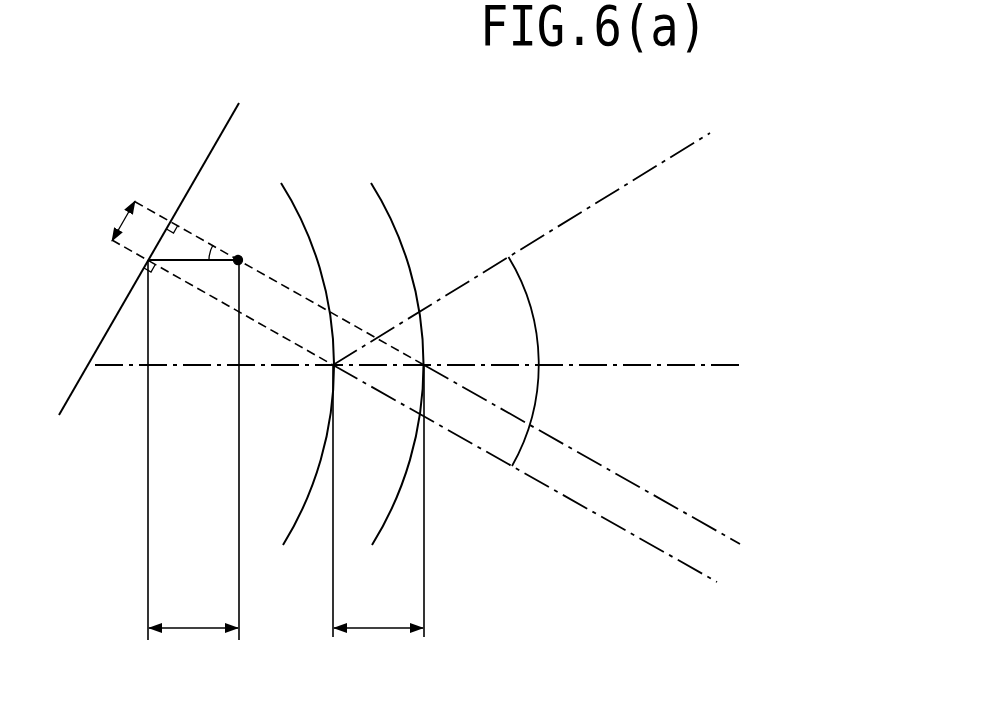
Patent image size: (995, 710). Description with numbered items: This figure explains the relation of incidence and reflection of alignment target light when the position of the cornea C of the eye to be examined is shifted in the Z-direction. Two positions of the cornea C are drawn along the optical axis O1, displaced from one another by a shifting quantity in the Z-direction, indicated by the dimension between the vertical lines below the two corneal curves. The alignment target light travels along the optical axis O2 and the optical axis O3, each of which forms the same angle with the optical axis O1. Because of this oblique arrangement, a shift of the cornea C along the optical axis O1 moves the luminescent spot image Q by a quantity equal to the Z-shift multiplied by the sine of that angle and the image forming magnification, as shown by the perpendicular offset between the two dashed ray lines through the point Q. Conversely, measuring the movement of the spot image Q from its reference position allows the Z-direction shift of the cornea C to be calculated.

The cornea C is at (414, 219).
The luminescent spot image Q is at (239, 256).
The optical axis O1 is at (645, 360).
The optical axis O2 is at (637, 180).
The optical axis O3 is at (640, 542).